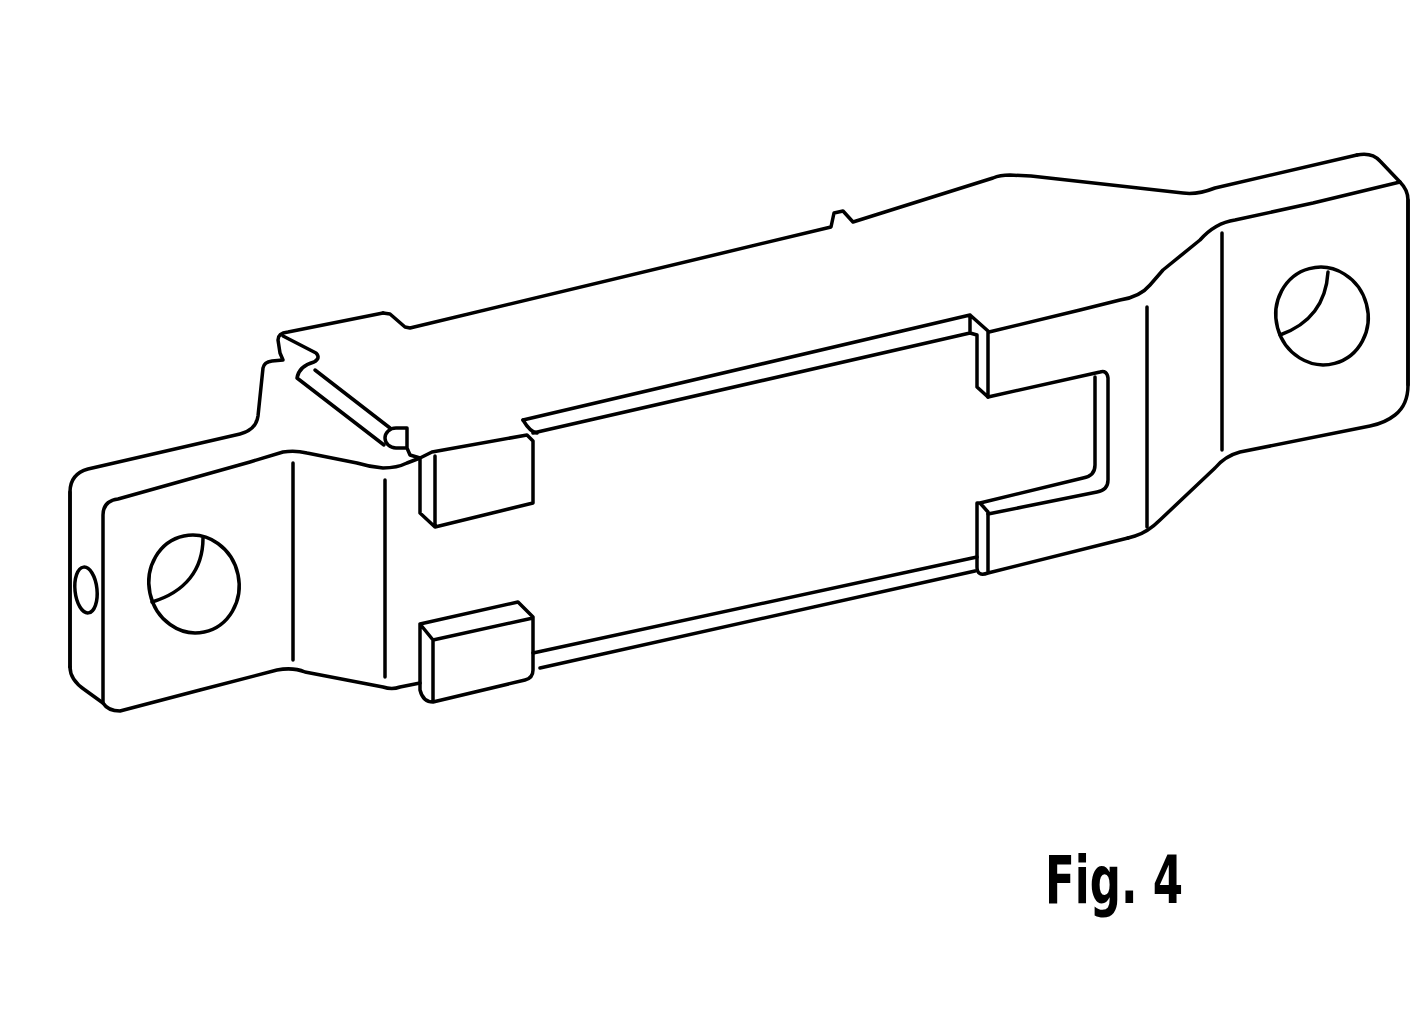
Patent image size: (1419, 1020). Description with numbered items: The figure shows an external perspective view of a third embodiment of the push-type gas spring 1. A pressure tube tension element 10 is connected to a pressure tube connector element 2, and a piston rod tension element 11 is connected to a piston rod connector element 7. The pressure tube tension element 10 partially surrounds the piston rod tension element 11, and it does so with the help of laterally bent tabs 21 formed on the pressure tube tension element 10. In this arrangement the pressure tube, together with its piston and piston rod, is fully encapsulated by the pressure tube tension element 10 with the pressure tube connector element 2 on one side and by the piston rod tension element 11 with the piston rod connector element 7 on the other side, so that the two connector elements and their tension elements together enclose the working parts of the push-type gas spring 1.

The push-type gas spring 1 is at (345, 208).
The pressure tube tension element 10 is at (1080, 210).
The pressure tube connector element 2 is at (1305, 233).
The piston rod connector element 7 is at (132, 672).
The piston rod tension element 11 is at (672, 592).
The laterally bent tabs 21 is at (478, 655).